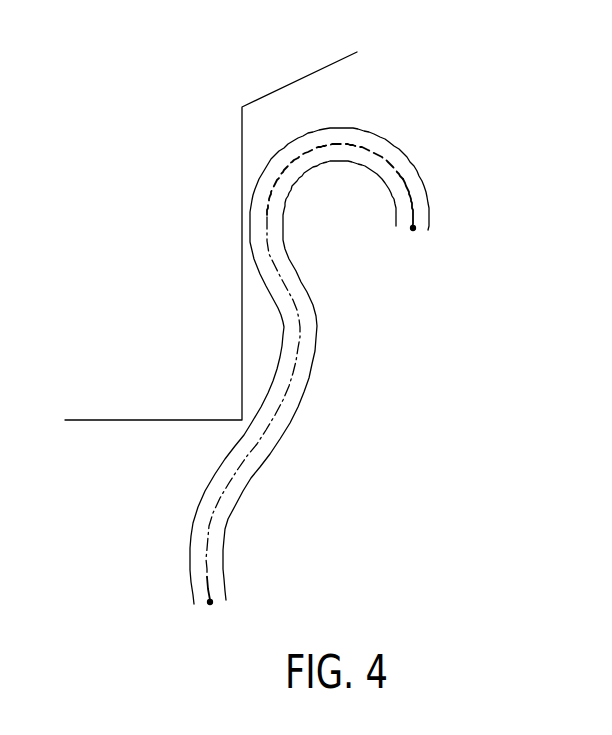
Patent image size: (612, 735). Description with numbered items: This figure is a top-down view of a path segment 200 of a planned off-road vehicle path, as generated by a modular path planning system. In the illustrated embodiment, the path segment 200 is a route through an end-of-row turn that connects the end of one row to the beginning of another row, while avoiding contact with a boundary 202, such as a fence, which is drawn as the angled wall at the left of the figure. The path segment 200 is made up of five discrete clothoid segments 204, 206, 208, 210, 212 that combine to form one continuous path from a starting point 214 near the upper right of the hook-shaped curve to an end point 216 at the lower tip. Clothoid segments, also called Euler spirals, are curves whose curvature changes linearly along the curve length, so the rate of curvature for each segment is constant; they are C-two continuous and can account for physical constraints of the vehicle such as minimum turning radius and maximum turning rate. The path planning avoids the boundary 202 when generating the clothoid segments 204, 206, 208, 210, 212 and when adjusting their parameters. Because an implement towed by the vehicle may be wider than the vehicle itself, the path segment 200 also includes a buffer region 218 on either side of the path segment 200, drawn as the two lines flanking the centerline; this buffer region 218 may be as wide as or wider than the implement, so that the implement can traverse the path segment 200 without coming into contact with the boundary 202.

The path segment 200 is at (337, 382).
The boundary 202 is at (299, 80).
The clothoid segment 204 is at (410, 200).
The clothoid segment 206 is at (342, 143).
The clothoid segment 208 is at (283, 272).
The clothoid segment 210 is at (253, 448).
The clothoid segment 212 is at (202, 570).
The starting point 214 is at (413, 228).
The end point 216 is at (210, 602).
The buffer region 218 is at (227, 552).